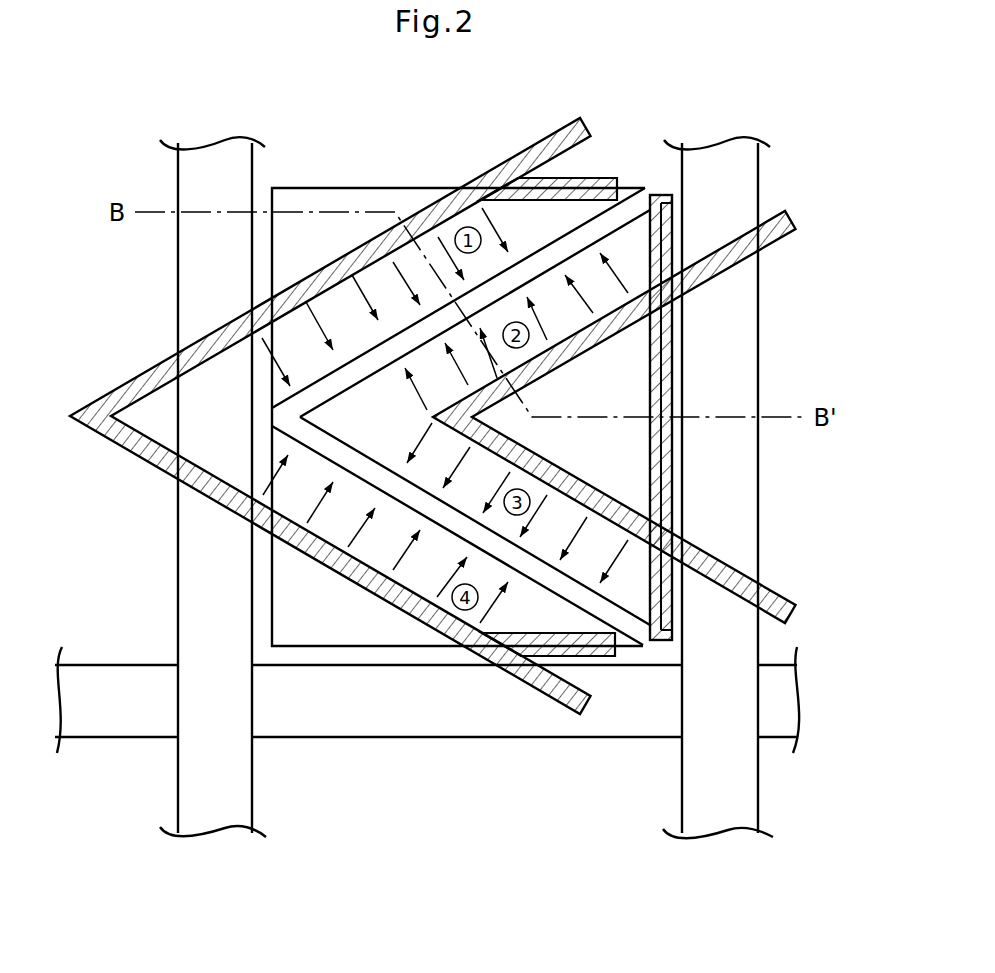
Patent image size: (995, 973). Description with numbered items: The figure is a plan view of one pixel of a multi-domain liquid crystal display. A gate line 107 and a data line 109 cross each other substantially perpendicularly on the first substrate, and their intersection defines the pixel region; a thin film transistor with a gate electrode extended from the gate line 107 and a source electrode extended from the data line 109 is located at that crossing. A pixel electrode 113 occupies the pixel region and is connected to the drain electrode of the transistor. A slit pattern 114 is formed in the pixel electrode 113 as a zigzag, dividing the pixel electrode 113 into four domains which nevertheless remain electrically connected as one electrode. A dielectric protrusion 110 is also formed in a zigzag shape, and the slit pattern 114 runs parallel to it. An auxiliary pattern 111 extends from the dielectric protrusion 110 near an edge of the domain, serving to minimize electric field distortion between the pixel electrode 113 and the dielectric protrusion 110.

The gate line 107 is at (413, 737).
The data line 109 is at (190, 575).
The dielectric protrusion 110 is at (208, 345).
The auxiliary pattern 111 is at (667, 603).
The pixel electrode 113 is at (310, 622).
The slit pattern 114 is at (560, 247).